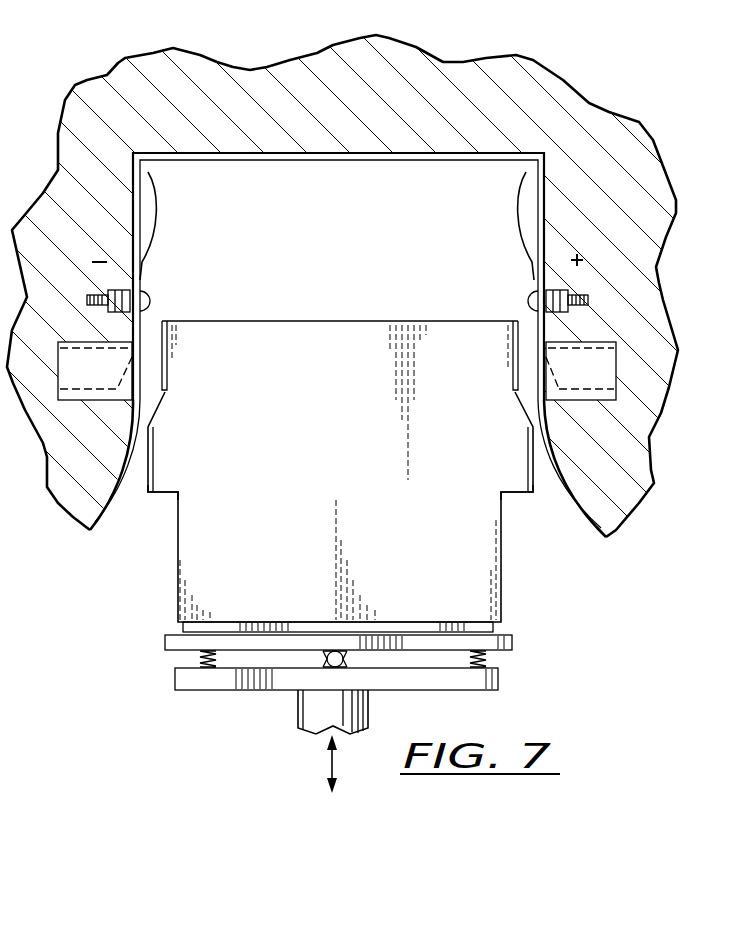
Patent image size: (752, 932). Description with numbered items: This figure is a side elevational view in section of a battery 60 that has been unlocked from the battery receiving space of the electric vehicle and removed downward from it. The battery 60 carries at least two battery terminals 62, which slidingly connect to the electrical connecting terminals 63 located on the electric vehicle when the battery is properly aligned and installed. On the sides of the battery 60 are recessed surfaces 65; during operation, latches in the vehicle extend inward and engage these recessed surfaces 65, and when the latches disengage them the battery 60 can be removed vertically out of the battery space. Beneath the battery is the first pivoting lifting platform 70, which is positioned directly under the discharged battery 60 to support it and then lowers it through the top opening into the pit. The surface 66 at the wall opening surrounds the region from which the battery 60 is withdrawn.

The battery 60 is at (340, 471).
The battery terminals 62 is at (168, 345).
The electrical connecting terminals 63 is at (157, 193).
The recessed surfaces 65 is at (166, 490).
The wall opening surface 66 is at (104, 514).
The first pivoting lifting platform 70 is at (467, 690).